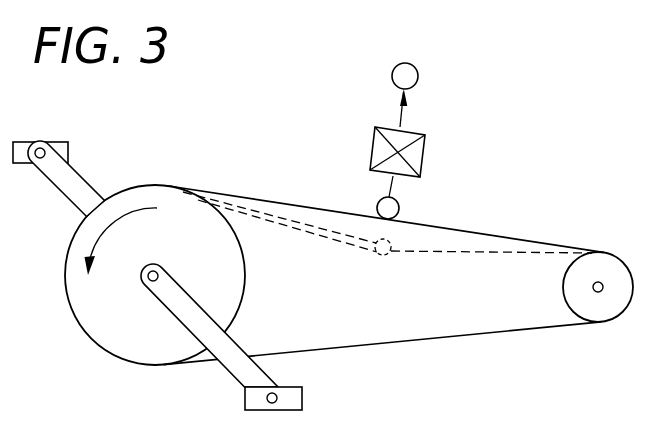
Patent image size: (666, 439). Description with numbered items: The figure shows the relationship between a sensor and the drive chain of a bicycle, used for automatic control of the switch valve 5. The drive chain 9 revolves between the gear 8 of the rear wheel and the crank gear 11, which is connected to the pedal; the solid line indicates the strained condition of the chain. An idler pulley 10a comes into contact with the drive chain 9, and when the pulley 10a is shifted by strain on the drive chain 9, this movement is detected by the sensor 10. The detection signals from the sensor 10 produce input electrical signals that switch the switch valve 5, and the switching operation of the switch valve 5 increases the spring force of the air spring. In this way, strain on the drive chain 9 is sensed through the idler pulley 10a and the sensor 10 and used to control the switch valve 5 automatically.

The switch valve 5 is at (405, 76).
The gear 8 is at (565, 284).
The drive chain 9 is at (521, 240).
The sensor 10 is at (425, 159).
The idler pulley 10a is at (399, 207).
The crank gear 11 is at (96, 221).